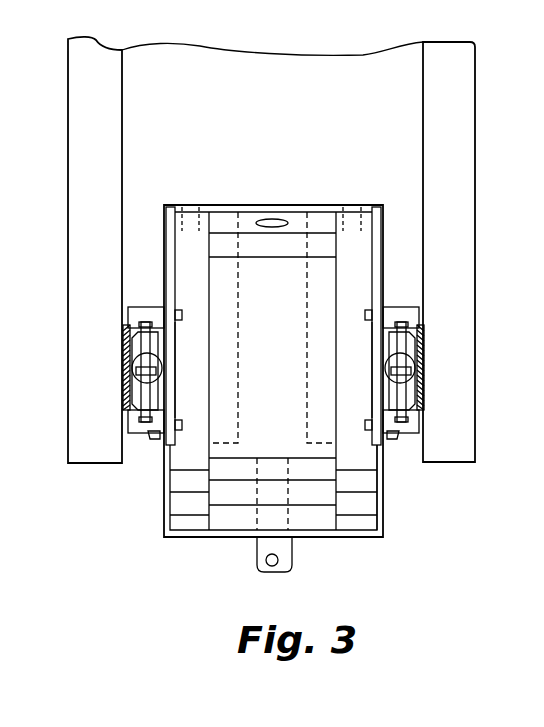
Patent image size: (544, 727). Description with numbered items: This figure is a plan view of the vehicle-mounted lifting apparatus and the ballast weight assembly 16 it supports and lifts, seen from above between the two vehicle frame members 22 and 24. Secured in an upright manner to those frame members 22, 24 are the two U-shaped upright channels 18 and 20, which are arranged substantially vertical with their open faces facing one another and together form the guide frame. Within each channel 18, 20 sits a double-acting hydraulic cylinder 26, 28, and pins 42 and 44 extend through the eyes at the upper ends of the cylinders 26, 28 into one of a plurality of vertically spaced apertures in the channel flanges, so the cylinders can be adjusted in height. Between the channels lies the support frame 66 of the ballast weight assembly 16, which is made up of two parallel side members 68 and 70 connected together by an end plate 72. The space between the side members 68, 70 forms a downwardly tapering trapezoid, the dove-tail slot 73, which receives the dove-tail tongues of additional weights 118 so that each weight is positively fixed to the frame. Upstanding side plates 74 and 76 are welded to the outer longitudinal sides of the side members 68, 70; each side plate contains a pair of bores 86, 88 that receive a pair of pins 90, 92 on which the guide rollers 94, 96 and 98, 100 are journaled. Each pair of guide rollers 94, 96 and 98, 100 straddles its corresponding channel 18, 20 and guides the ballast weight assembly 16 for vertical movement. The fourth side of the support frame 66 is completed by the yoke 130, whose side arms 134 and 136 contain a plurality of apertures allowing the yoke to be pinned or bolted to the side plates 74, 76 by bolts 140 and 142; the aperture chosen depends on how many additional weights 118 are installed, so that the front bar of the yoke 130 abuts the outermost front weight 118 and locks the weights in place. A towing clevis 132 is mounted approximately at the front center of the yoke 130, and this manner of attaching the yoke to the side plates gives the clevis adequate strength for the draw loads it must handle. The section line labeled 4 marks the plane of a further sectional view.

The section line 4- 4 is at (127, 200).
The ballast weight assembly 16 is at (408, 514).
The upright channel 18 is at (123, 340).
The upright channel 20 is at (425, 350).
The frame member 22 is at (103, 93).
The frame member 24 is at (458, 93).
The double-acting hydraulic cylinder 26 is at (130, 352).
The double-acting hydraulic cylinder 28 is at (424, 380).
The pin 42 is at (130, 397).
The pin 44 is at (423, 396).
The support frame 66 is at (197, 231).
The side member 68 is at (207, 290).
The side member 70 is at (364, 290).
The end plate 72 is at (282, 206).
The dove-tail slot 73 is at (272, 477).
The side plate 74 is at (164, 250).
The side plate 76 is at (383, 250).
The bores 86 is at (177, 417).
The bores 88 is at (371, 417).
The pins 90 is at (182, 315).
The pins 92 is at (365, 315).
The guide roller 94 is at (134, 307).
The guide roller 96 is at (135, 425).
The guide roller 98 is at (413, 307).
The guide roller 100 is at (411, 423).
The additional weight 118 is at (366, 505).
The yoke 130 is at (226, 540).
The towing clevis 132 is at (281, 572).
The side arm 134 is at (163, 507).
The side arm 136 is at (386, 472).
The bolt 140 is at (156, 443).
The bolt 142 is at (391, 443).